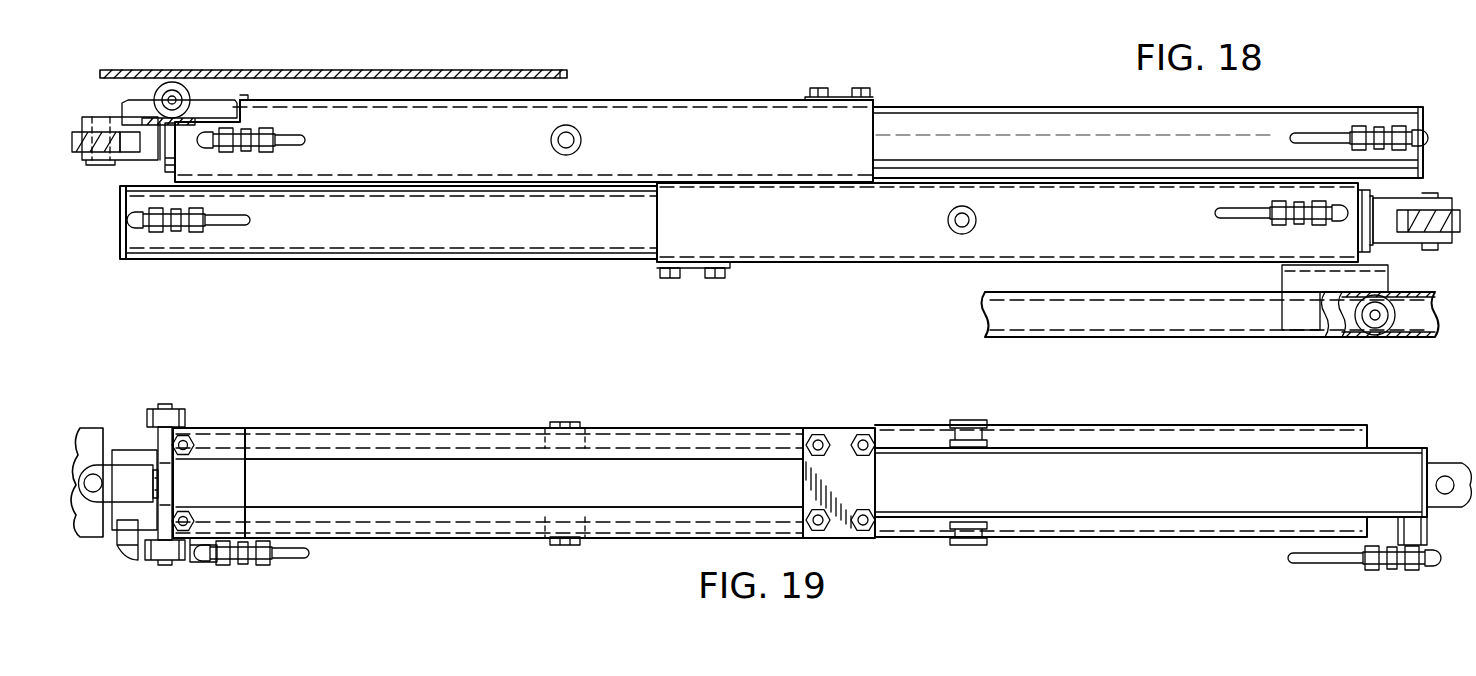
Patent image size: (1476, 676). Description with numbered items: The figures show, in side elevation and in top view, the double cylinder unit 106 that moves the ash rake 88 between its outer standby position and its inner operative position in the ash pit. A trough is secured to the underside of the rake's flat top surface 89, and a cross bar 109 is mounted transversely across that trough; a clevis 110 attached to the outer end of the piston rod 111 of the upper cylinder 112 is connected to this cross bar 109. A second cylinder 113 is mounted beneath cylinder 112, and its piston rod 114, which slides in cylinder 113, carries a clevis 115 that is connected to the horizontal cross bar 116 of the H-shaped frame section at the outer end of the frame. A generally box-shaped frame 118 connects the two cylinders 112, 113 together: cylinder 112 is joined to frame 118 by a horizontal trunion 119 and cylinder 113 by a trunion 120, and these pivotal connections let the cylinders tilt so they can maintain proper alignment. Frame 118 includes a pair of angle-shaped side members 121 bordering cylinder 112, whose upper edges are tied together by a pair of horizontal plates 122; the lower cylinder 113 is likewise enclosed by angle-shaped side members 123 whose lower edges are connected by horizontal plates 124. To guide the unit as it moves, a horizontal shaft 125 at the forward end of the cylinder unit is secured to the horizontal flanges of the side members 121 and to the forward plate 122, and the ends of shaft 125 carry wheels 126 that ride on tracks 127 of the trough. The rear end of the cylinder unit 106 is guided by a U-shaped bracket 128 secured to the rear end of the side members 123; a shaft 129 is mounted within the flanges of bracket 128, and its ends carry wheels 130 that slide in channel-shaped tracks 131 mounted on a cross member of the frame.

In FIG. 18, the ash rake 88 is at (484, 68).
In FIG. 18, the top surface 89 is at (532, 72).
In FIG. 18, the double cylinder unit 106 is at (718, 66).
In FIG. 19, the double cylinder unit 106 is at (731, 420).
In FIG. 18, the cross bar 109 is at (73, 148).
In FIG. 19, the cross bar 109 is at (86, 444).
In FIG. 18, the clevis 110 is at (145, 156).
In FIG. 19, the clevis 110 is at (120, 470).
In FIG. 18, the piston rod 111 is at (178, 145).
In FIG. 19, the piston rod 111 is at (150, 484).
In FIG. 18, the cylinder 112 is at (962, 120).
In FIG. 19, the cylinder 112 is at (1078, 466).
In FIG. 18, the second cylinder 113 is at (415, 248).
In FIG. 18, the piston rod 114 is at (1366, 226).
In FIG. 18, the clevis 115 is at (1440, 195).
In FIG. 18, the horizontal cross bar 116 is at (1456, 226).
In FIG. 18, the box-shaped frame 118 is at (358, 112).
In FIG. 19, the box-shaped frame 118 is at (670, 426).
In FIG. 18, the horizontal trunion 119 is at (581, 138).
In FIG. 19, the horizontal trunion 119 is at (568, 420).
In FIG. 18, the trunion 120 is at (948, 221).
In FIG. 19, the trunion 120 is at (968, 420).
In FIG. 18, the angle-shaped side members 121 is at (762, 118).
In FIG. 19, the angle-shaped side members 121 is at (460, 430).
In FIG. 18, the horizontal plates 122 is at (244, 96).
In FIG. 19, the horizontal plates 122 is at (214, 462).
In FIG. 18, the side members 123 is at (835, 245).
In FIG. 19, the side members 123 is at (1192, 425).
In FIG. 18, the horizontal plates 124 is at (680, 280).
In FIG. 18, the horizontal shaft 125 is at (171, 94).
In FIG. 19, the horizontal shaft 125 is at (166, 412).
In FIG. 18, the wheels 126 is at (178, 86).
In FIG. 19, the wheels 126 is at (180, 412).
In FIG. 18, the tracks 127 is at (130, 99).
In FIG. 18, the U-shaped bracket 128 is at (1304, 336).
In FIG. 18, the shaft 129 is at (1372, 322).
In FIG. 18, the wheels 130 is at (1388, 326).
In FIG. 18, the channel-shaped tracks 131 is at (1412, 340).